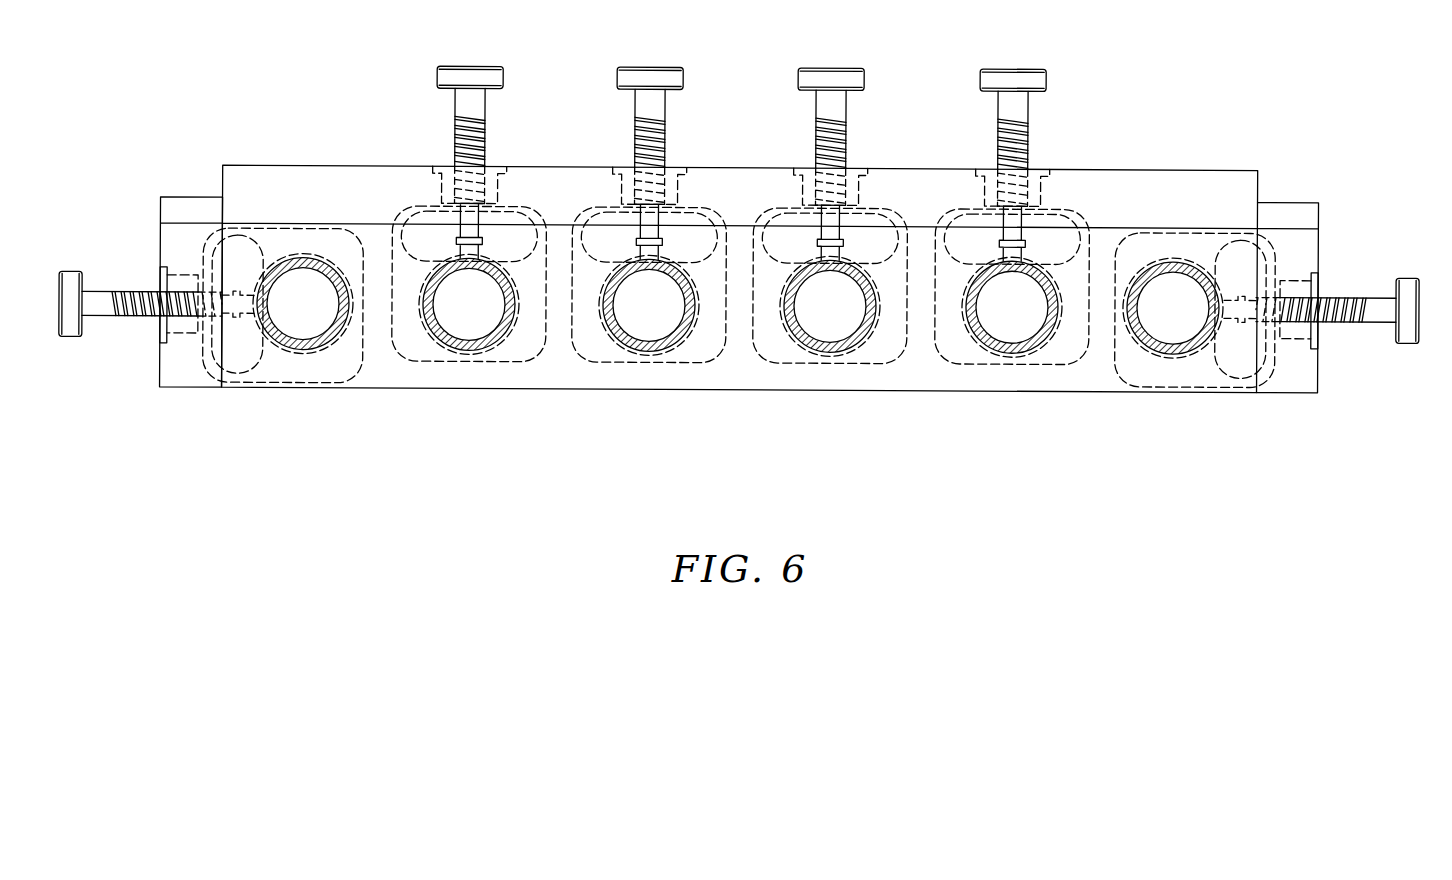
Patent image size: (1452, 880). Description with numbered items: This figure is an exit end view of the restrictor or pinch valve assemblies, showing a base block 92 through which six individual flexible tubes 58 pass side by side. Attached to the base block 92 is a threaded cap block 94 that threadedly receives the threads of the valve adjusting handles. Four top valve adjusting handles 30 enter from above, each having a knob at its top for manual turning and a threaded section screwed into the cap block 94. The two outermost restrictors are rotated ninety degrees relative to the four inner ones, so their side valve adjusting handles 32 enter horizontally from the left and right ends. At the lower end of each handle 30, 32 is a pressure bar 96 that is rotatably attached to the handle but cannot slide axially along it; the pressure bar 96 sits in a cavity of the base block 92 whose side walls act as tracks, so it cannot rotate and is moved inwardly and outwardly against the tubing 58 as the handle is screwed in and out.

The top valve adjusting handle 30 is at (652, 62).
The side valve adjusting handle 32 is at (1412, 337).
The flexible connector tubing 58 is at (977, 339).
The base block 92 is at (1097, 387).
The cap block 94 is at (158, 245).
The pressure bar 96 is at (1052, 215).